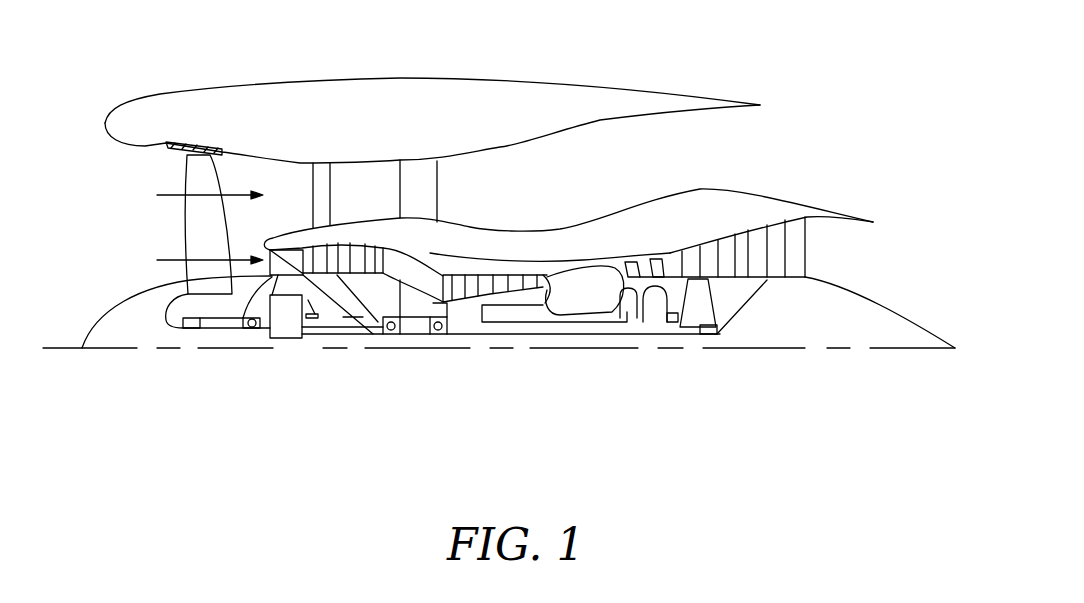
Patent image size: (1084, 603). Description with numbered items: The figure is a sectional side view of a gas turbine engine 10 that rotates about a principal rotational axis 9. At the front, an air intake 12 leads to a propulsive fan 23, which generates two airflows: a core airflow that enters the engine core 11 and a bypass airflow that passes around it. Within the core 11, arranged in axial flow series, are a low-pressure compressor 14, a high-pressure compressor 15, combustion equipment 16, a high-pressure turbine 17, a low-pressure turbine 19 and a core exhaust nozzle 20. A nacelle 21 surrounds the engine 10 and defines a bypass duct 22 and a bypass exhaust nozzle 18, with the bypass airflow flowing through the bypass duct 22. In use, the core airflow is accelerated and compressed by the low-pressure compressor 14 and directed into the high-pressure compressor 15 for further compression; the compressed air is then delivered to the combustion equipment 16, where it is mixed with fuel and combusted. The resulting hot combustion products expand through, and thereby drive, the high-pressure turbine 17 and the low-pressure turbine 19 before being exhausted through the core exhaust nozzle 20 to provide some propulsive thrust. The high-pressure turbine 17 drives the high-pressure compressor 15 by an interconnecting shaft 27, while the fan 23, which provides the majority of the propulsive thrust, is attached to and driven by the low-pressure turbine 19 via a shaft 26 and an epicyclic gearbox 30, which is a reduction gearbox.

The principal rotational axis 9 is at (755, 350).
The gas turbine engine 10 is at (183, 93).
The core 11 is at (553, 230).
The air intake 12 is at (130, 172).
The low-pressure compressor 14 is at (355, 250).
The high-pressure compressor 15 is at (500, 283).
The combustion equipment 16 is at (577, 287).
The high-pressure turbine 17 is at (640, 268).
The bypass exhaust nozzle 18 is at (755, 145).
The low-pressure turbine 19 is at (777, 240).
The core exhaust nozzle 20 is at (842, 252).
The nacelle 21 is at (413, 90).
The bypass duct 22 is at (703, 159).
The propulsive fan 23 is at (187, 227).
The shaft 26 is at (497, 337).
The interconnecting shaft 27 is at (537, 322).
The epicyclic gearbox 30 is at (283, 330).